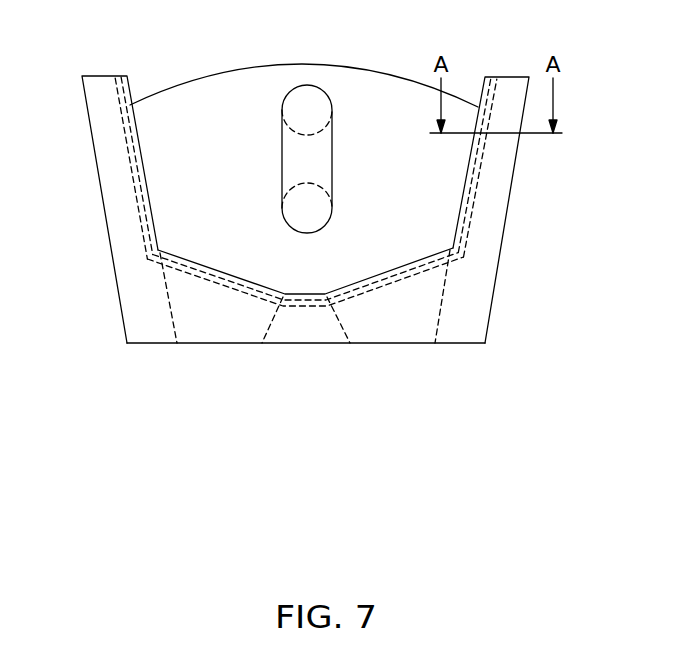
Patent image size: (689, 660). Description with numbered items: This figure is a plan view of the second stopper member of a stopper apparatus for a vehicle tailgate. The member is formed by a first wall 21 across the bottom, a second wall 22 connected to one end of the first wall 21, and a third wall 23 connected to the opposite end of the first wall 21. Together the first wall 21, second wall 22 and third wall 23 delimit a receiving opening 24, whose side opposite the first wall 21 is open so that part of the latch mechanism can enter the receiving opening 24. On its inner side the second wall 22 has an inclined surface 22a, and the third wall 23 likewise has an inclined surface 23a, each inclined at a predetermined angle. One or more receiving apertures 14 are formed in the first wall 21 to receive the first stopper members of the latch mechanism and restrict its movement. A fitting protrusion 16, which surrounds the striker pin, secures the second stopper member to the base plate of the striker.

The receiving aperture 14 is at (176, 322).
The fitting protrusion 16 is at (467, 228).
The first wall 21 is at (293, 343).
The second wall 22 is at (117, 210).
The inclined surface 22a is at (140, 181).
The third wall 23 is at (513, 83).
The inclined surface 23a is at (460, 212).
The receiving opening 24 is at (218, 127).